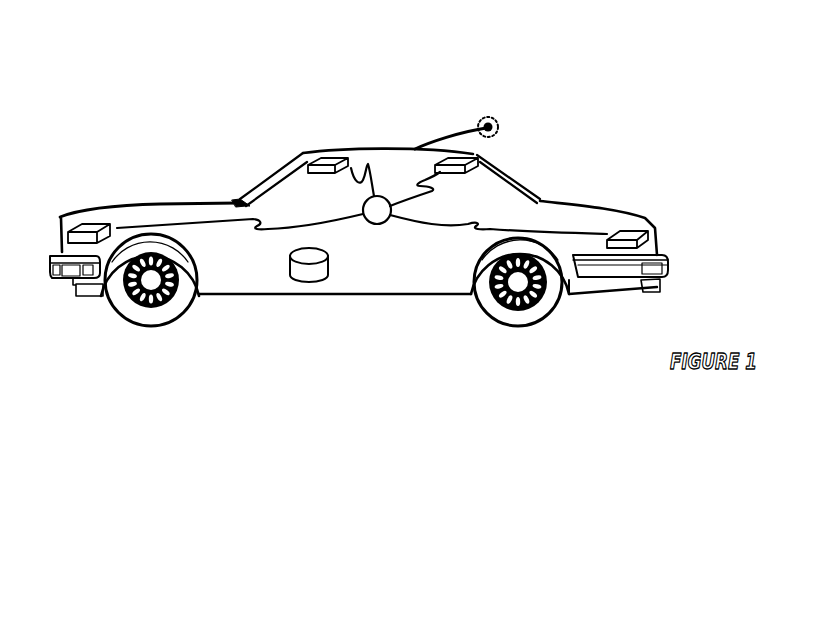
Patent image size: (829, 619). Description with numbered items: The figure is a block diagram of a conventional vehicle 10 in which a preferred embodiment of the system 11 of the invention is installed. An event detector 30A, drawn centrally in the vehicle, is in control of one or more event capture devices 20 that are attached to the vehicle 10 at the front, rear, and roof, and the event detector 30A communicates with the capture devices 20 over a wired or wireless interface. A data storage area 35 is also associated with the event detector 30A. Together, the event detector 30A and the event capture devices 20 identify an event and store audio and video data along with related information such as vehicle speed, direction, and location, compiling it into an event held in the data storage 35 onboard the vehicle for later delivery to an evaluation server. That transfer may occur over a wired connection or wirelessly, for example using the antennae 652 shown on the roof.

The vehicle 10 is at (541, 118).
The system 11 is at (129, 97).
The event capture devices 20 is at (297, 157).
The antennae 652 is at (481, 114).
The data storage area 35 is at (297, 272).
The event detector 30A is at (385, 223).